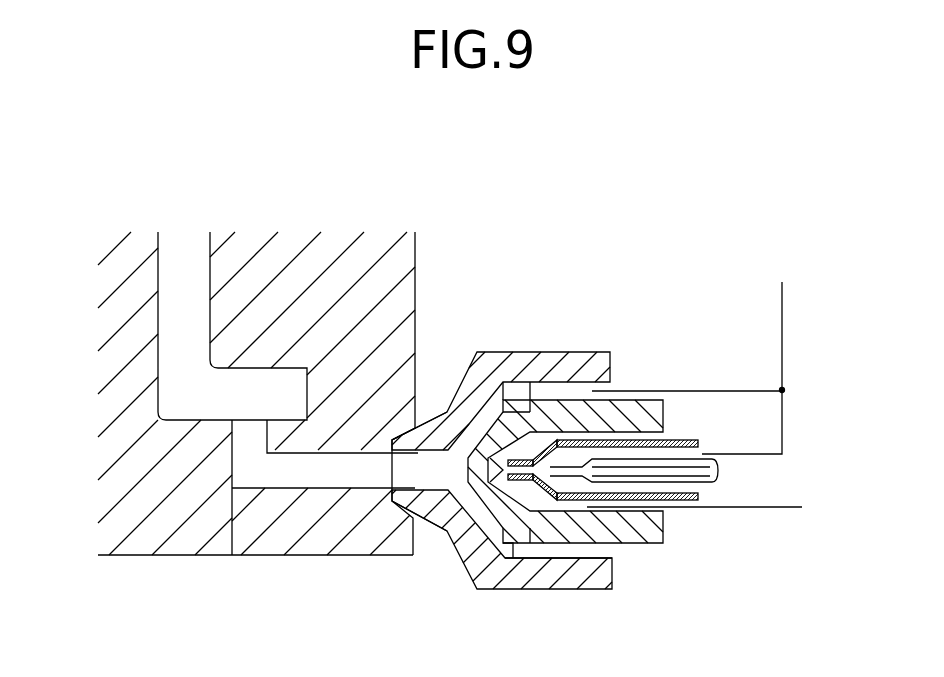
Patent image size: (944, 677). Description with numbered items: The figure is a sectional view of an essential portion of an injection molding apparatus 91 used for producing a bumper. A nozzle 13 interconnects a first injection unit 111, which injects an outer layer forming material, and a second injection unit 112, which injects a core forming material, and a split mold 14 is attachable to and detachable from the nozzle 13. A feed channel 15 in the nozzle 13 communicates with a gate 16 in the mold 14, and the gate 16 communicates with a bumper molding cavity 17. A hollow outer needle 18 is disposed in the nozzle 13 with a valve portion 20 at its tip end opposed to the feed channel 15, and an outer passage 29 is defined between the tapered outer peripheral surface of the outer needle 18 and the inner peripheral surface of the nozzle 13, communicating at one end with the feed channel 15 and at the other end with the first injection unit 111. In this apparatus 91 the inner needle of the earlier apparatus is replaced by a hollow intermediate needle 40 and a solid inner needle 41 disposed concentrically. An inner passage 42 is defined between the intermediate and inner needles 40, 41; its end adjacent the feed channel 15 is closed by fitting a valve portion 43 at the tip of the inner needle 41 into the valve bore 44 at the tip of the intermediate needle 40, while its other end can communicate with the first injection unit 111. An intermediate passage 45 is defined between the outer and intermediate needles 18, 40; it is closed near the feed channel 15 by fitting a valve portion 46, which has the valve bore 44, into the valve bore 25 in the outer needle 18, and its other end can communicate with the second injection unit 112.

The split mold 14 is at (127, 293).
The bumper molding cavity 17 is at (173, 347).
The gate 16 is at (307, 478).
The feed channel 15 is at (415, 480).
The nozzle 13 is at (489, 352).
The valve portion 46 is at (478, 418).
The valve portion 20 is at (470, 560).
The valve bore 25 is at (450, 525).
The outer passage 29 is at (590, 560).
The hollow outer needle 18 is at (620, 530).
The intermediate passage 45 is at (532, 412).
The inner passage 42 is at (568, 492).
The valve portion 43 is at (563, 468).
The valve bore 44 is at (524, 500).
The hollow intermediate needle 40 is at (675, 437).
The solid inner needle 41 is at (713, 472).
The injection molding apparatus 91 is at (554, 330).
The first injection unit 111 is at (703, 334).
The second injection unit 112 is at (727, 508).